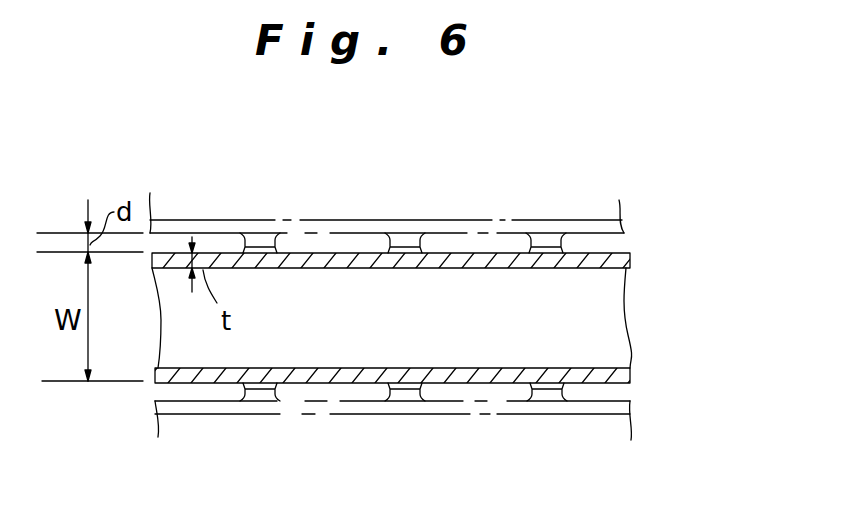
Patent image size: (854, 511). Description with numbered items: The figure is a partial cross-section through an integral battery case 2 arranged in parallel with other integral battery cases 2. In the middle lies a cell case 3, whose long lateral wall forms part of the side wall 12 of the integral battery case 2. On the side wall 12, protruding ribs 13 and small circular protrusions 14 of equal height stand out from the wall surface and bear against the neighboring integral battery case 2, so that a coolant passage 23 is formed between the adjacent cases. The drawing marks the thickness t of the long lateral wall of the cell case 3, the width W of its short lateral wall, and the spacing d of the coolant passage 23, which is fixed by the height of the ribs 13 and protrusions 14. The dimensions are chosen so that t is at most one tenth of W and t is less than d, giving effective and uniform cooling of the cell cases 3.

The integral battery case 2 is at (443, 314).
The cell case 3 is at (362, 331).
The side wall 12 is at (340, 262).
The rib 13 is at (431, 317).
The protrusion 14 is at (540, 246).
The coolant passage 23 is at (480, 250).